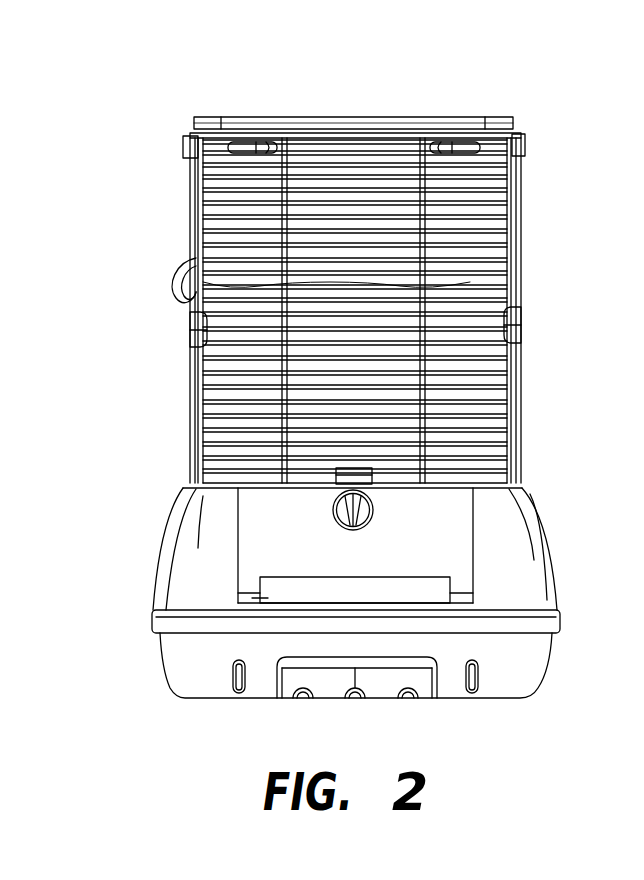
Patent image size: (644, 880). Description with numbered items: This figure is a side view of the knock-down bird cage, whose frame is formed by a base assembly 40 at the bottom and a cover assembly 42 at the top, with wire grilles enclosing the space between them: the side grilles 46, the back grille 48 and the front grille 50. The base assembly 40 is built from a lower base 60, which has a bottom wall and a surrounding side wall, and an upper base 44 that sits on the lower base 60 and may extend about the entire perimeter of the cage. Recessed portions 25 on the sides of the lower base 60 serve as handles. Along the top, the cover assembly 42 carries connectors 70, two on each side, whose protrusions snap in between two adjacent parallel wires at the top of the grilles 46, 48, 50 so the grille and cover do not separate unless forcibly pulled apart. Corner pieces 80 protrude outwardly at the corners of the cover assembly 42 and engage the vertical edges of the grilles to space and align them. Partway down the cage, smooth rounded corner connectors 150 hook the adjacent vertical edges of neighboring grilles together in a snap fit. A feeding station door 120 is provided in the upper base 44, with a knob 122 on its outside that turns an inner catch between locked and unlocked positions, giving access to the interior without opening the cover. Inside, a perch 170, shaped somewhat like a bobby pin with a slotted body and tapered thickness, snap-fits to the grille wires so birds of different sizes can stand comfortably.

The recessed portions 25 is at (387, 680).
The base assembly 40 is at (336, 529).
The cover assembly 42 is at (217, 114).
The upper base 44 is at (183, 488).
The side grilles 46 is at (482, 378).
The back grille 48 is at (520, 228).
The front grille 50 is at (190, 203).
The lower base 60 is at (170, 686).
The connectors 70 is at (230, 147).
The corner pieces 80 is at (184, 143).
The feeding station door 120 is at (450, 531).
The knob 122 is at (333, 512).
The corner connectors 150 is at (190, 323).
The perch 170 is at (188, 258).